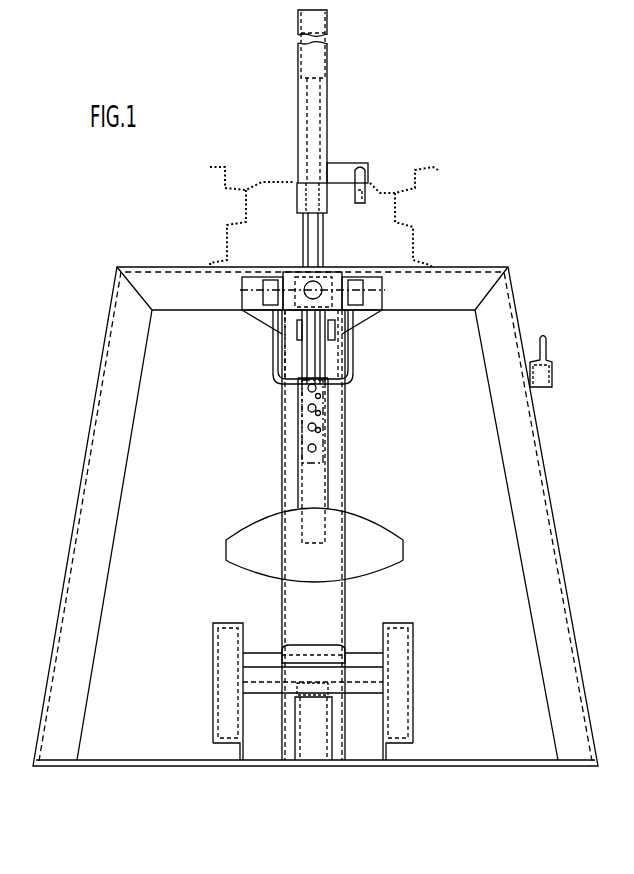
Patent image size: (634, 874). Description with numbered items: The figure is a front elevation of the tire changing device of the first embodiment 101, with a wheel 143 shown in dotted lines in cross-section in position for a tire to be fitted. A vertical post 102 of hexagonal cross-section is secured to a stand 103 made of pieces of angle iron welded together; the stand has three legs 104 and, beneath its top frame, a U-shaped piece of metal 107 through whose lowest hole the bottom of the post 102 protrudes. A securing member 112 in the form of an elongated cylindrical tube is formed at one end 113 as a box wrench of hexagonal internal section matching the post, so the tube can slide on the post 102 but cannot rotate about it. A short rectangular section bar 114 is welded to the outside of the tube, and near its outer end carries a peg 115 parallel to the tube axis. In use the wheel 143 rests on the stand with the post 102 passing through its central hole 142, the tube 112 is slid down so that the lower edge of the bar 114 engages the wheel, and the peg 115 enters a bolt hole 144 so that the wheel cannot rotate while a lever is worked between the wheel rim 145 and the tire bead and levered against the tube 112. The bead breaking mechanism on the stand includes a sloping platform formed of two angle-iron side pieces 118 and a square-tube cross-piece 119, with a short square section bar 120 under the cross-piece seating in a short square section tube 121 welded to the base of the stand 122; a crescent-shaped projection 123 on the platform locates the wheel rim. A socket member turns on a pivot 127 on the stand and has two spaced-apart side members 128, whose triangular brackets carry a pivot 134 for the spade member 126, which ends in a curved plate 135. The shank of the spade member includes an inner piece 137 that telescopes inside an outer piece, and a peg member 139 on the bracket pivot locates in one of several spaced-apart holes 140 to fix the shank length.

The first embodiment 101 is at (555, 432).
The vertical post 102 is at (302, 248).
The stand 103 is at (508, 303).
The legs 104 is at (110, 383).
The U-shaped piece of metal 107 is at (353, 365).
The securing member 112 is at (320, 60).
The box wrench end 113 is at (297, 200).
The rectangular section bar 114 is at (335, 167).
The peg 115 is at (363, 193).
The side pieces 118 is at (407, 645).
The cross-piece 119 is at (380, 662).
The short square section bar 120 is at (290, 693).
The short square section tube 121 is at (332, 730).
The base of the stand 122 is at (163, 762).
The projection 123 is at (327, 645).
The spade member 126 is at (305, 487).
The pivot 127 is at (297, 294).
The side members 128 is at (270, 305).
The pivot 134 is at (332, 330).
The curved plate 135 is at (258, 537).
The inner piece of shank tubing 137 is at (302, 363).
The peg member 139 is at (320, 423).
The spaced-apart holes 140 is at (320, 408).
The central hole 142 is at (297, 182).
The wheel 143 is at (418, 250).
The bolt hole 144 is at (367, 183).
The wheel rim 145 is at (433, 167).